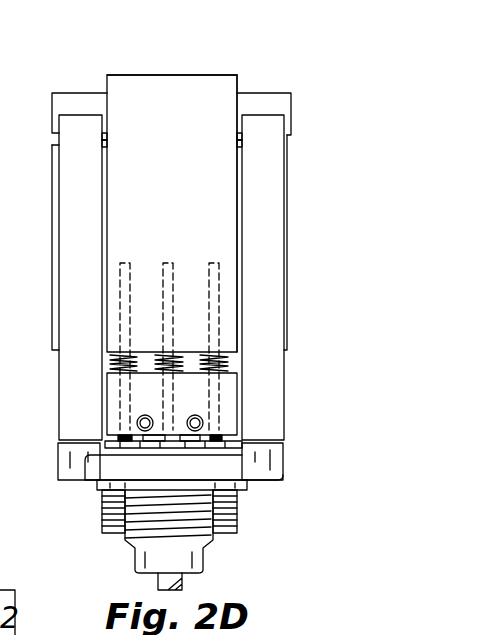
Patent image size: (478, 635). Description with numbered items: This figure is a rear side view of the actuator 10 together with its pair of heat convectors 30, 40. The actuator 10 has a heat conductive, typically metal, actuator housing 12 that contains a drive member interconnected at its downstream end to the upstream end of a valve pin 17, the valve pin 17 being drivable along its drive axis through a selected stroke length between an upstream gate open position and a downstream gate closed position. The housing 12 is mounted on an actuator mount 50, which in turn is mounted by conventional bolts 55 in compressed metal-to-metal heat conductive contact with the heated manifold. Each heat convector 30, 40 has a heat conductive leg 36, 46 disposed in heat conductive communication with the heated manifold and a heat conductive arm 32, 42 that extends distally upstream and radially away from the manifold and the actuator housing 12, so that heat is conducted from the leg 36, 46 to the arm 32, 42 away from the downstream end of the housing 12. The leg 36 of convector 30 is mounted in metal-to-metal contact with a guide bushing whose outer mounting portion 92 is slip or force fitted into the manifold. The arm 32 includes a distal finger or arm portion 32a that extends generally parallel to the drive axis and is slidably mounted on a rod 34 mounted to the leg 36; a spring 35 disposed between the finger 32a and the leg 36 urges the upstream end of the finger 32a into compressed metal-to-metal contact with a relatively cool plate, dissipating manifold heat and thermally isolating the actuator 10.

The actuator 10 is at (40, 165).
The actuator housing 12 is at (288, 170).
The valve pin 17 is at (182, 579).
The heat convector 30 is at (152, 73).
The heat conductive arm 32 is at (172, 80).
The arm portion 32a is at (204, 95).
The rod 34 is at (130, 345).
The spring 35 is at (213, 372).
The heat conductive leg 36 is at (232, 397).
The heat convector 40 is at (68, 110).
The heat conductive arm 42 is at (78, 115).
The heat conductive leg 46 is at (60, 440).
The actuator mount 50 is at (285, 458).
The bolts 55 is at (103, 525).
The outer mounting portion of the guide bushing 92 is at (215, 537).